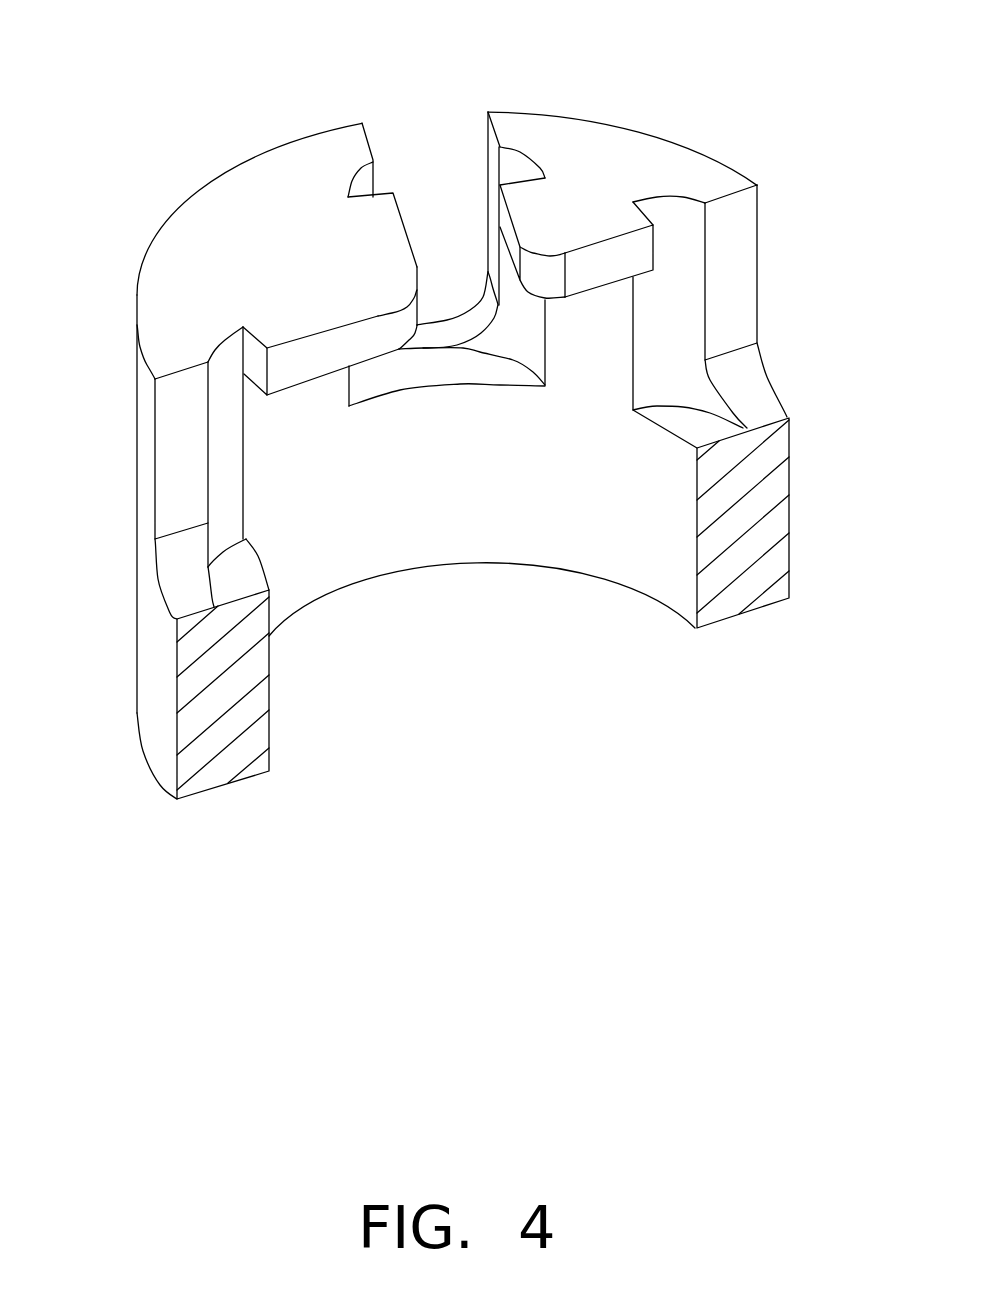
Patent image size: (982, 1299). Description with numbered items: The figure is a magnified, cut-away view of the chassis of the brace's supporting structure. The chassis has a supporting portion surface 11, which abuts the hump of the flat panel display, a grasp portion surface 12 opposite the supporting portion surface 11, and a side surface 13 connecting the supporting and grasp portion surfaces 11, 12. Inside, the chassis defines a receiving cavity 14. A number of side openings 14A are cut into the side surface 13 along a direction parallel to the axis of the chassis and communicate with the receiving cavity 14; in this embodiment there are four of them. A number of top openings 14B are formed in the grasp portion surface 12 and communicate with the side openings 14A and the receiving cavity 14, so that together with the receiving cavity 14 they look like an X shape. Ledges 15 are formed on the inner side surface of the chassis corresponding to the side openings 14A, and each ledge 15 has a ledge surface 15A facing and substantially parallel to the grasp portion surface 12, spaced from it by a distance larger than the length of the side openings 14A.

The supporting portion surface 11 is at (151, 772).
The grasp portion surface 12 is at (227, 237).
The side surface 13 is at (148, 476).
The receiving cavity 14 is at (588, 418).
The side opening 14A is at (492, 168).
The top opening 14B is at (443, 223).
The ledge 15 is at (472, 385).
The ledge surface 15A is at (367, 387).